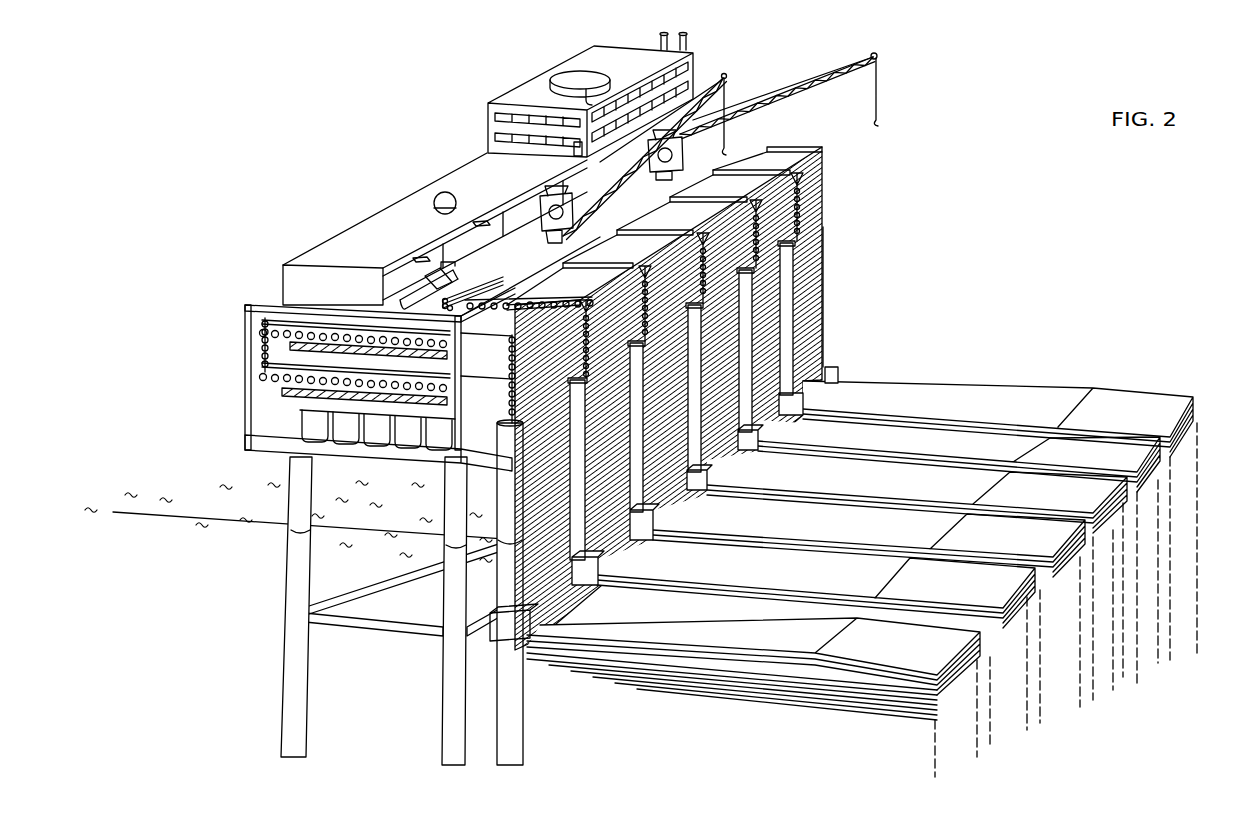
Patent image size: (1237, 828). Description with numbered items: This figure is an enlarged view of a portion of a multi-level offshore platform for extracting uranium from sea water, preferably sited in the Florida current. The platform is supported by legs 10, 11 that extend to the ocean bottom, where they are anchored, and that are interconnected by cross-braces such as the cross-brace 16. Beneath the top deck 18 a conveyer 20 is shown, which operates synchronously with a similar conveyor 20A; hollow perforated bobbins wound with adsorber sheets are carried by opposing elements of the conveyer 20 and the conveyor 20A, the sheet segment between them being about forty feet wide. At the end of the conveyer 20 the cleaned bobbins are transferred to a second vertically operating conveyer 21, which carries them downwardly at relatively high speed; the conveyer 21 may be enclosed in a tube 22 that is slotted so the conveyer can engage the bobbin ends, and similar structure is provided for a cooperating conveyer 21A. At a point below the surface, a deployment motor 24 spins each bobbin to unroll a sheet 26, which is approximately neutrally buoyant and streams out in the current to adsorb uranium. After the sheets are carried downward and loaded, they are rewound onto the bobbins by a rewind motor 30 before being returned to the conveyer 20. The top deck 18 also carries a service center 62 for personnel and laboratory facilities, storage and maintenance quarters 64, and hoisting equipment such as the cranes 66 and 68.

The leg 10 is at (292, 720).
The leg 11 is at (452, 720).
The cross-brace 16 is at (353, 581).
The top deck 18 is at (264, 300).
The conveyer 20 is at (266, 335).
The conveyor 20A is at (510, 300).
The second vertically operating conveyer 21 is at (427, 440).
The cooperating conveyer 21A is at (852, 462).
The tube 22 is at (540, 606).
The deployment motor 24 is at (492, 628).
The sheet 26 is at (785, 639).
The rewind motor 30 is at (277, 410).
The service center 62 is at (628, 50).
The storage and maintenance quarters 64 is at (313, 262).
The crane 66 is at (702, 92).
The crane 68 is at (843, 76).